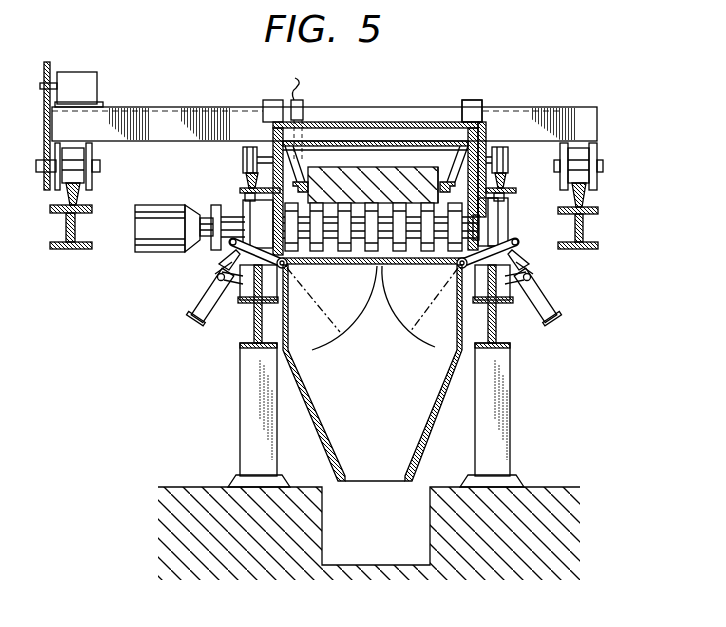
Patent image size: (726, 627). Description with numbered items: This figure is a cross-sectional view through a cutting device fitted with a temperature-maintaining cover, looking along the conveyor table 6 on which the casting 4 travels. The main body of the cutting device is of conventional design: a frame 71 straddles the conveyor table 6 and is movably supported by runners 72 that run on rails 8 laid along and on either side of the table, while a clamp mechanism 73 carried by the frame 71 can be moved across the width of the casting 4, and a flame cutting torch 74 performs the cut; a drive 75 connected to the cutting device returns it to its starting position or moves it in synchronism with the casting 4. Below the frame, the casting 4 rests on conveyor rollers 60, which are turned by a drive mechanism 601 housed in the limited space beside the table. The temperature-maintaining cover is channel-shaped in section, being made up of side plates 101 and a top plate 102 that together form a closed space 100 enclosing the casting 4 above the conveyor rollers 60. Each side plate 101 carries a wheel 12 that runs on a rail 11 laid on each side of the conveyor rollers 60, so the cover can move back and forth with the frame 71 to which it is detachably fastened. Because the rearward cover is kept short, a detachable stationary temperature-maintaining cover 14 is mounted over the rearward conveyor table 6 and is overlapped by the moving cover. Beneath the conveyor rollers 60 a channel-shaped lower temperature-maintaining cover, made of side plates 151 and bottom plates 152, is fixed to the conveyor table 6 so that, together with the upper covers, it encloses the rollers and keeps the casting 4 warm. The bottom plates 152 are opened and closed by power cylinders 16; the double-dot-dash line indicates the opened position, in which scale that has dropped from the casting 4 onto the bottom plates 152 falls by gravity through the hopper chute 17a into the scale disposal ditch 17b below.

The casting 4 is at (370, 170).
The conveyor table 6 is at (511, 308).
The rails 8 is at (584, 200).
The rail 11 is at (238, 184).
The wheel 12 is at (240, 158).
The stationary temperature-maintaining cover 14 is at (437, 165).
The power cylinders 16 is at (203, 300).
The hopper chute 17a is at (313, 428).
The scale disposal ditch 17b is at (372, 545).
The conveyor rollers 60 is at (345, 252).
The frame 71 is at (351, 107).
The runners 72 is at (606, 163).
The clamp mechanism 73 is at (466, 124).
The flame cutting torch 74 is at (323, 140).
The drive 75 is at (98, 85).
The closed space 100 is at (393, 158).
The side plates 101 is at (482, 135).
The top plate 102 is at (415, 143).
The side plates 151 is at (487, 212).
The bottom plates 152 is at (403, 265).
The drive mechanism 601 is at (152, 216).